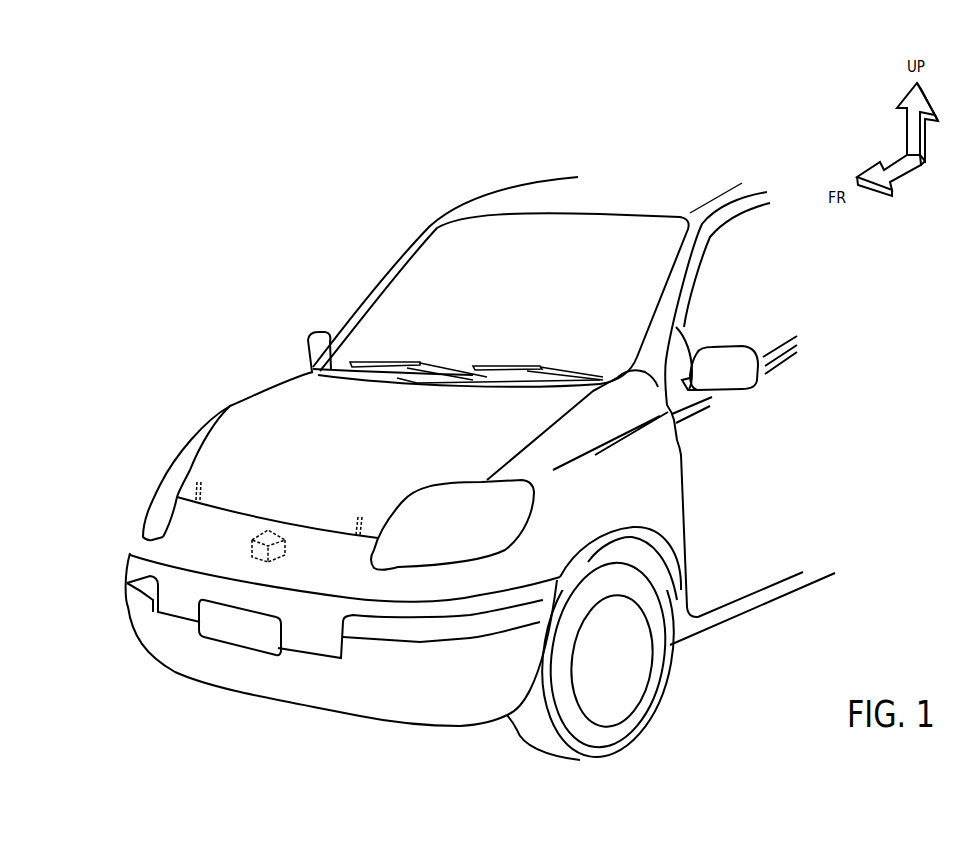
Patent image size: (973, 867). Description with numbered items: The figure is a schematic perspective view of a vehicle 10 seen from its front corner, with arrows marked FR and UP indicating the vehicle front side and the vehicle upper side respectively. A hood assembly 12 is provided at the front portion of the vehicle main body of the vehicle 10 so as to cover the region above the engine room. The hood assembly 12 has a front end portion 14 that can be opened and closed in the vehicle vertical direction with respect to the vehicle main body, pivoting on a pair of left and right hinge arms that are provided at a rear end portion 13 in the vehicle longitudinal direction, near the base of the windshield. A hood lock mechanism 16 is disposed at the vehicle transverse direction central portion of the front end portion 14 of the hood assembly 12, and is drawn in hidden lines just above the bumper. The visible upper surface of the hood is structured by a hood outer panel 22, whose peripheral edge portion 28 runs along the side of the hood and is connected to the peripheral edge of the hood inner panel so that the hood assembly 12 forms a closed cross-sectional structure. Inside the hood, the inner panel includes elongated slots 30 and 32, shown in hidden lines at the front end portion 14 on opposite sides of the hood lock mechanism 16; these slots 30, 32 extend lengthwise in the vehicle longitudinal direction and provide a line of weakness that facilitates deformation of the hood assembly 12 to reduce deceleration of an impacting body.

The vehicle 10 is at (321, 219).
The hood assembly 12 is at (275, 402).
The rear end portion 13 is at (478, 397).
The front end portion 14 is at (302, 495).
The hood lock mechanism 16 is at (252, 548).
The hood outer panel 22 is at (350, 404).
The peripheral edge portion 28 is at (546, 410).
The elongated slot 30 is at (199, 485).
The elongated slot 32 is at (363, 513).